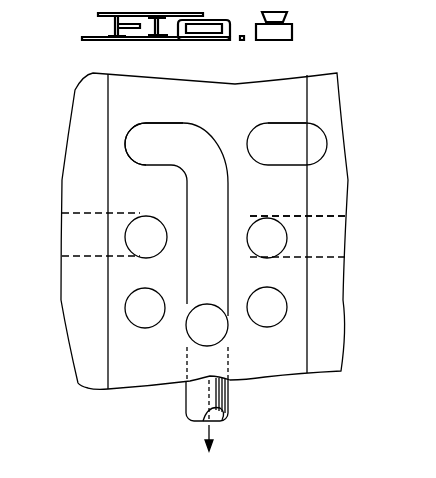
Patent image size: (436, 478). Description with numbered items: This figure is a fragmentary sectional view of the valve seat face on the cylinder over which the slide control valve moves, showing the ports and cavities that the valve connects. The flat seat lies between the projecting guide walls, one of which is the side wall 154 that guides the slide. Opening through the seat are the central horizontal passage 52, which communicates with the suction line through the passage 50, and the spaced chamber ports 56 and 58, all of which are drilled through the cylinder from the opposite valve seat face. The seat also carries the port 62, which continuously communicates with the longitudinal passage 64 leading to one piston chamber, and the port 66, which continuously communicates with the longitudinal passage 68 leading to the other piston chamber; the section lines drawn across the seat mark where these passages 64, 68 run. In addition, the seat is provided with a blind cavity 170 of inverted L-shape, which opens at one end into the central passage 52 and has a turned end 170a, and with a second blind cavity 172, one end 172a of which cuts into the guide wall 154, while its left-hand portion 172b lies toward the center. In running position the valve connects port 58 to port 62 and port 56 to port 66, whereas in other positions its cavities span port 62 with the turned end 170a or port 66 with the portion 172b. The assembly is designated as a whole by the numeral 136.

The passage 50 is at (186, 406).
The horizontal passage 52 is at (215, 337).
The chamber port 56 is at (284, 309).
The chamber port 58 is at (132, 315).
The port 62 is at (148, 218).
The passage 64 is at (75, 213).
The port 66 is at (264, 219).
The passage 68 is at (337, 215).
The assembly 136 is at (217, 112).
The side wall 154 is at (335, 84).
The blind cavity 170 is at (209, 151).
The turned end 170a is at (136, 124).
The blind cavity 172 is at (284, 126).
The end of blind cavity 172a is at (323, 137).
The left-hand portion 172b is at (267, 124).